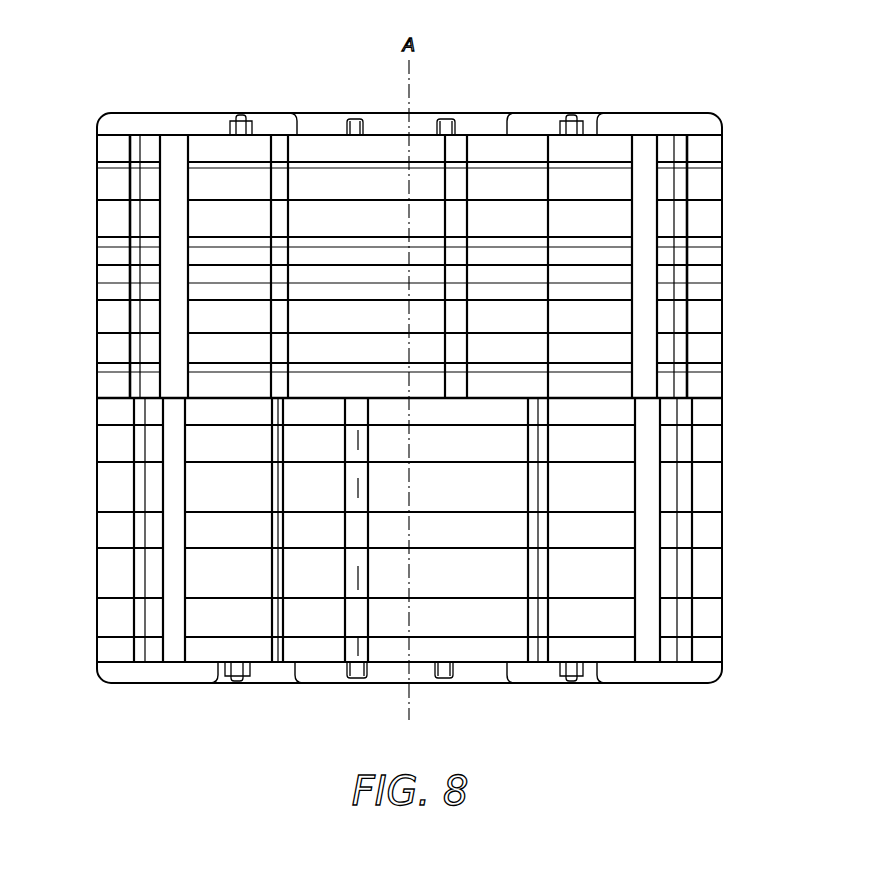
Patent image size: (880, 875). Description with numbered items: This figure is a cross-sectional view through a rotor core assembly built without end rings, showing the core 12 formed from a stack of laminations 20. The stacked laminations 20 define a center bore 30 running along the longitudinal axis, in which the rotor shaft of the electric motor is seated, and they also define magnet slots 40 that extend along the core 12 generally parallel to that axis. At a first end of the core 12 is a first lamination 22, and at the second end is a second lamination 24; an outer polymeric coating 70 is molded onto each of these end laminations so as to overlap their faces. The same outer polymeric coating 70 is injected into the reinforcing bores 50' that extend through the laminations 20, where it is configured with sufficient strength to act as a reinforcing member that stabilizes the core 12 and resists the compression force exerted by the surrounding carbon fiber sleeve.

The core 12 is at (478, 150).
The laminations 20 is at (237, 218).
The first lamination 22 is at (203, 150).
The second lamination 24 is at (197, 645).
The center bore 30 is at (548, 150).
The magnet slots 40 is at (127, 149).
The reinforcing bores 50' is at (408, 236).
The outer polymeric coating 70 is at (172, 187).